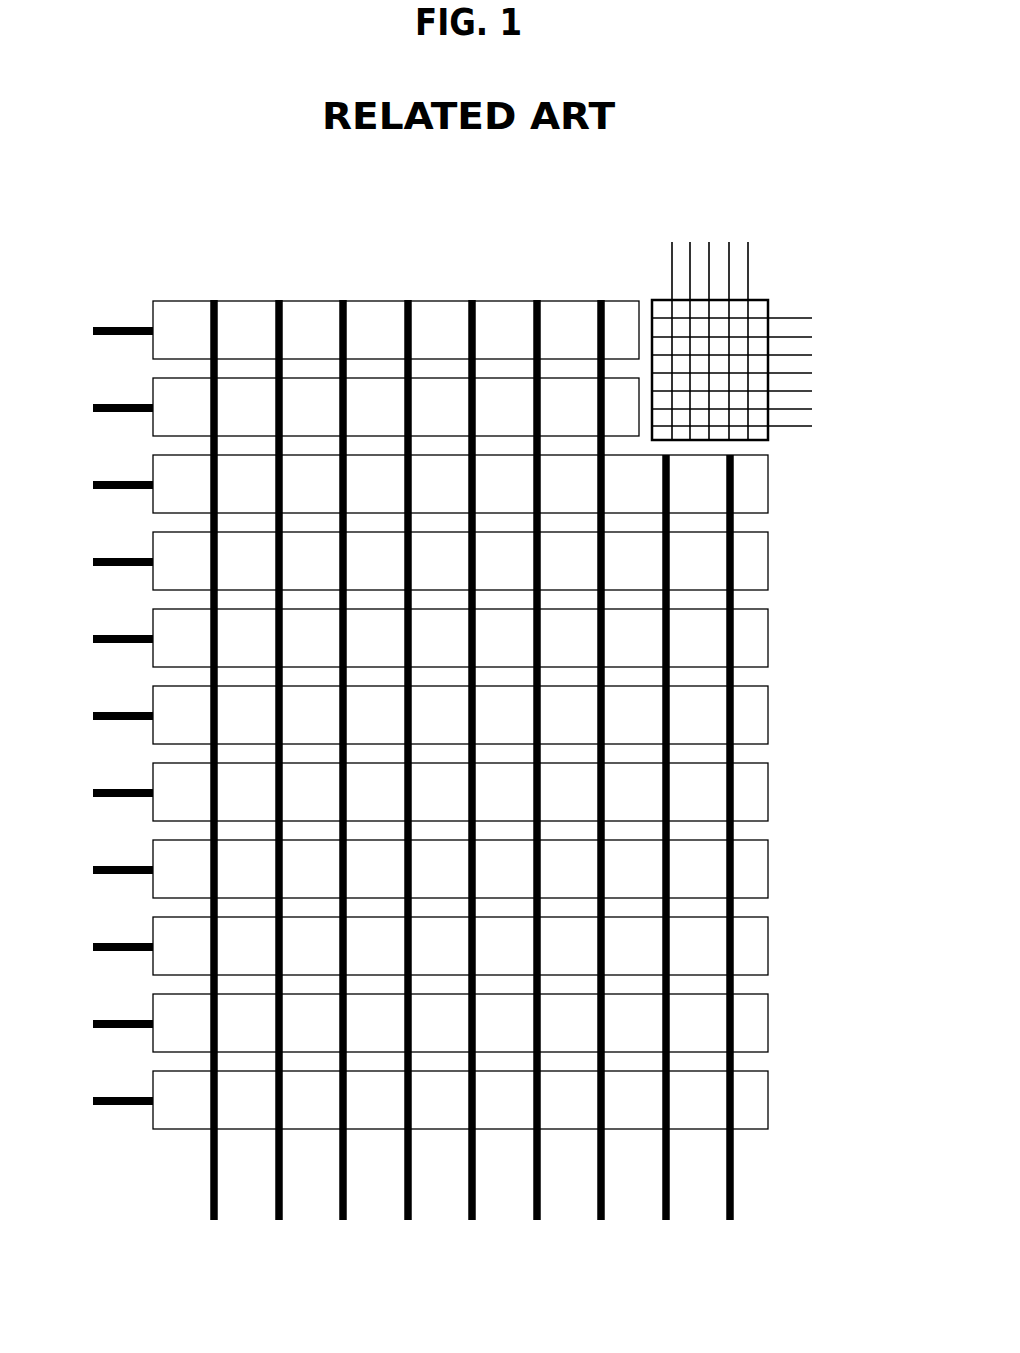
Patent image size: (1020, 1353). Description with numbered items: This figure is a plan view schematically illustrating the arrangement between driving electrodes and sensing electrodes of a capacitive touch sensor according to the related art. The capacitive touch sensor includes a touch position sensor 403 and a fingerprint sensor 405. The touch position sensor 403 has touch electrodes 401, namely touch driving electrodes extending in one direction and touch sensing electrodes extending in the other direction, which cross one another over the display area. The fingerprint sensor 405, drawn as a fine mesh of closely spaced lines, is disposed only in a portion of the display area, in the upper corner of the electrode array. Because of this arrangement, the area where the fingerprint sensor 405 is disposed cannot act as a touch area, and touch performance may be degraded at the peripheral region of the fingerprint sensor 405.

The touch electrodes 401 is at (403, 760).
The touch position sensor 403 is at (472, 760).
The fingerprint sensor 405 is at (777, 317).